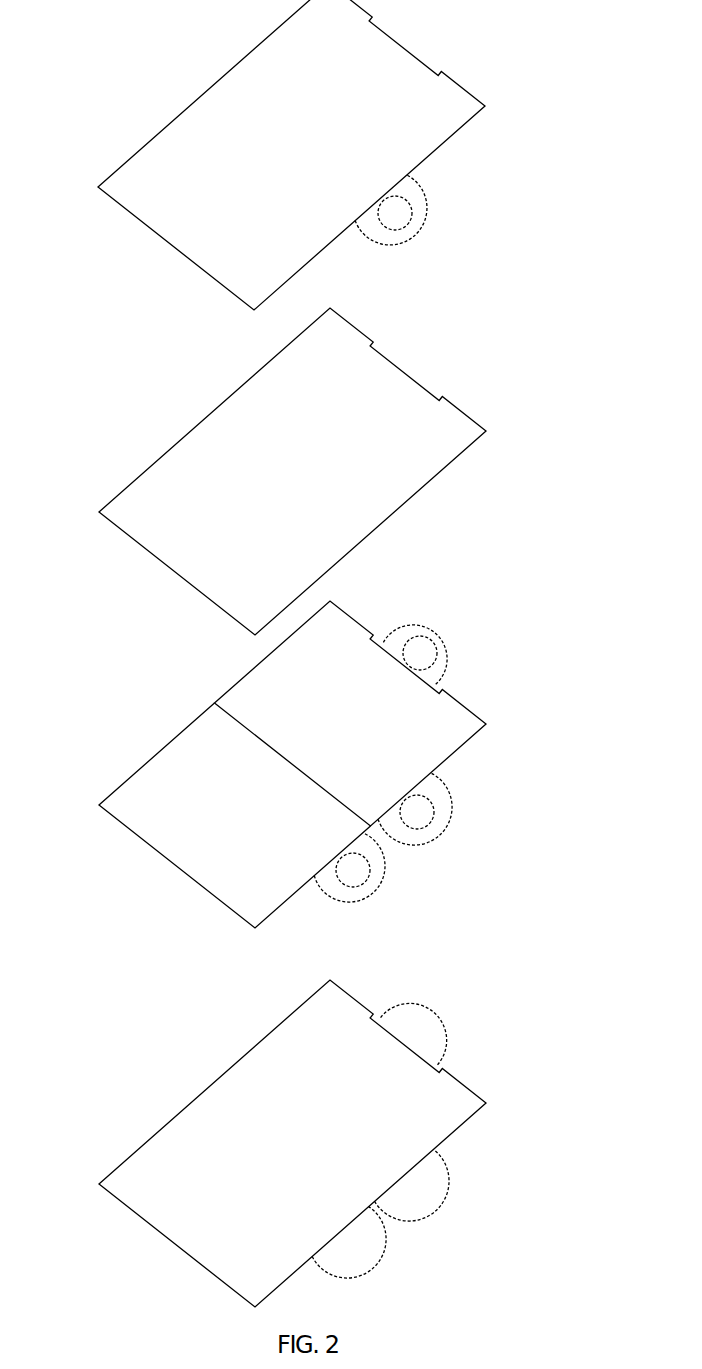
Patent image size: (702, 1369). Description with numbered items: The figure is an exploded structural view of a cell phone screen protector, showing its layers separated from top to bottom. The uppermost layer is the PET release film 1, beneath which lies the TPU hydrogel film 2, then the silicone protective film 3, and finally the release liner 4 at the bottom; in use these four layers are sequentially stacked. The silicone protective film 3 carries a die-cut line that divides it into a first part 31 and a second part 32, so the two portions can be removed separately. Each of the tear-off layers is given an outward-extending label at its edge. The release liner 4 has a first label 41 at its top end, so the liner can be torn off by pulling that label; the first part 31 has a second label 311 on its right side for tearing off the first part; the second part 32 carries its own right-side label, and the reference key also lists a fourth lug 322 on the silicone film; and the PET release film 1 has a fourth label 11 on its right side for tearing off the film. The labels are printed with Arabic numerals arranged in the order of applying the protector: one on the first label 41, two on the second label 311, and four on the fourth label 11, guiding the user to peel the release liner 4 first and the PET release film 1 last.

The PET release film 1 is at (438, 118).
The fourth label 11 is at (407, 192).
The TPU hydrogel film 2 is at (385, 472).
The silicone protective film 3 is at (305, 764).
The first part 31 is at (420, 757).
The second label 311 is at (432, 792).
The second part 32 is at (178, 783).
The fourth lug 322 is at (363, 840).
The release liner 4 is at (342, 1153).
The first label 41 is at (447, 1038).